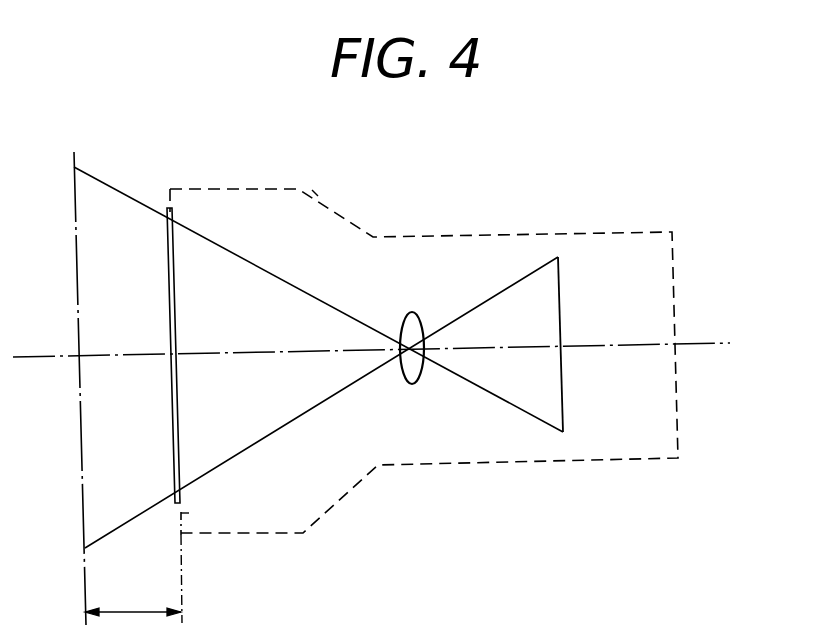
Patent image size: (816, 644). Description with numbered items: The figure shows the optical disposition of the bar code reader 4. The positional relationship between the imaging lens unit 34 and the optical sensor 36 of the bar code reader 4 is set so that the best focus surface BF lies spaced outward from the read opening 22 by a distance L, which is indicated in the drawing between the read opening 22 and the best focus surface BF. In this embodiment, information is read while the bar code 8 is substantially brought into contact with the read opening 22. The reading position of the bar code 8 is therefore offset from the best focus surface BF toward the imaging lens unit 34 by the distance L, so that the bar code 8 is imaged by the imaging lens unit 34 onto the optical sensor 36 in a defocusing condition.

The best focus surface BF is at (70, 373).
The bar code reader 4 is at (316, 193).
The bar code 8 is at (167, 247).
The read opening 22 is at (183, 512).
The imaging lens unit 34 is at (414, 386).
The optical sensor 36 is at (563, 404).